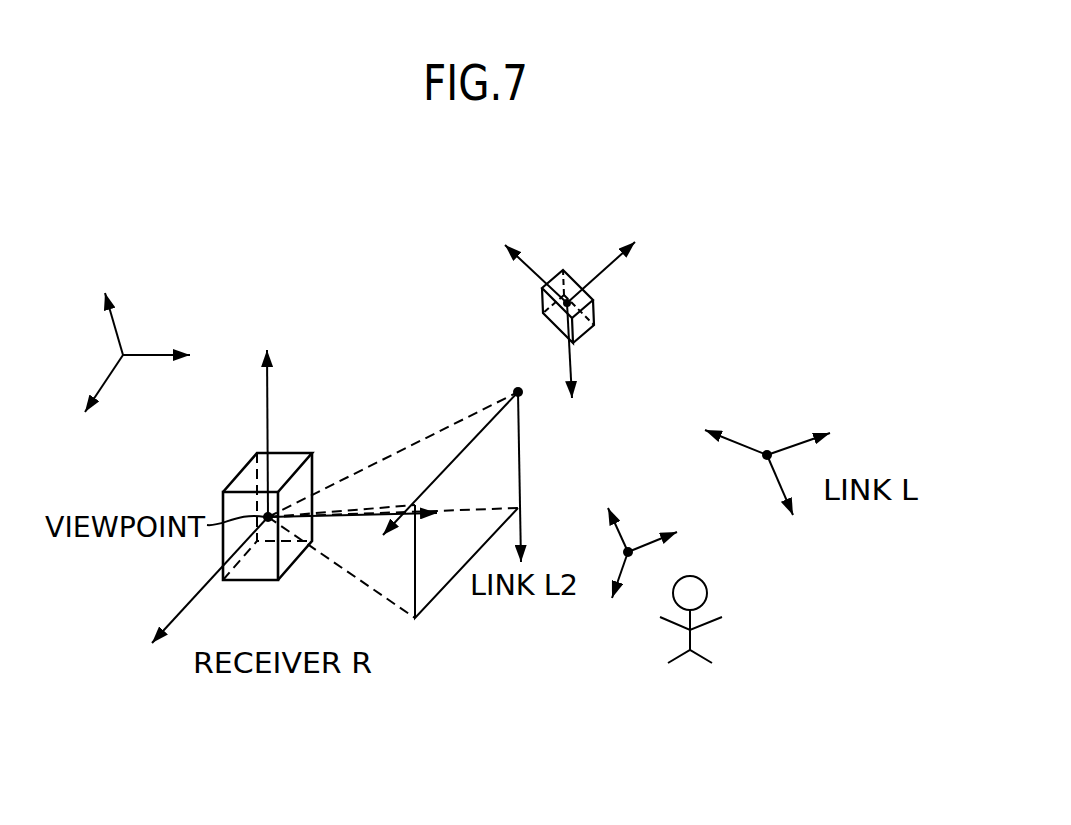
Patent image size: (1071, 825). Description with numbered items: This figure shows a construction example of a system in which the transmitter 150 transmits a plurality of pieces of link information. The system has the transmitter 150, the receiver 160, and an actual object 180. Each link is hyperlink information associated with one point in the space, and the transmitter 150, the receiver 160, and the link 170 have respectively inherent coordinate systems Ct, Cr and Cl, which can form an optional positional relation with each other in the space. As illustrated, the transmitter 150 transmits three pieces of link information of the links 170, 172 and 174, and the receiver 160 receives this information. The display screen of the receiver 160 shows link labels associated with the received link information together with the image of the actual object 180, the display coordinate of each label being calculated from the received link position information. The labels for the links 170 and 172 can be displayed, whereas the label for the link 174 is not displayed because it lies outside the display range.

The transmitter 150 is at (588, 313).
The receiver 160 is at (245, 477).
The link 170 is at (798, 387).
The link 172 is at (615, 478).
The link 174 is at (112, 270).
The actual object 180 is at (733, 587).